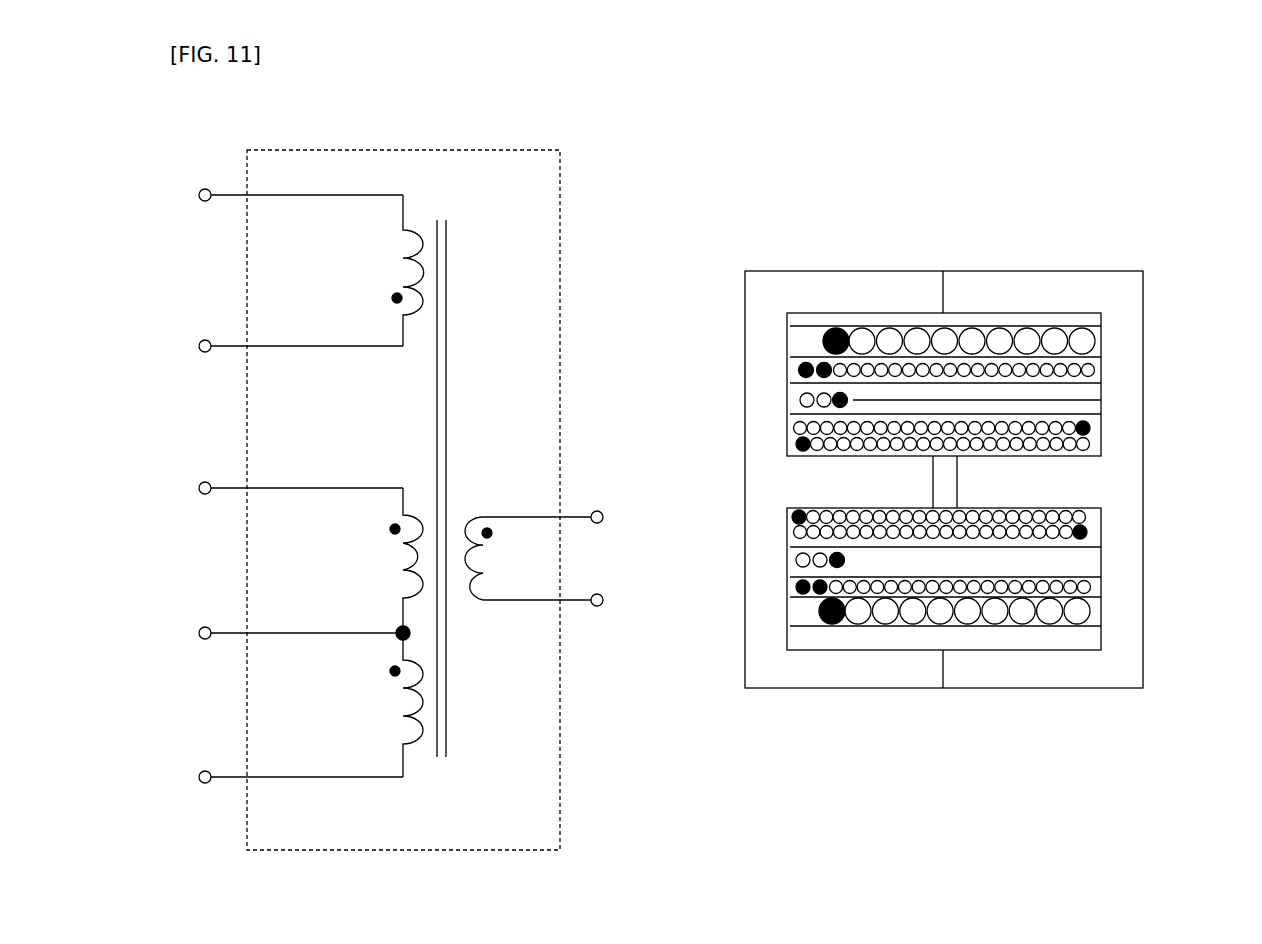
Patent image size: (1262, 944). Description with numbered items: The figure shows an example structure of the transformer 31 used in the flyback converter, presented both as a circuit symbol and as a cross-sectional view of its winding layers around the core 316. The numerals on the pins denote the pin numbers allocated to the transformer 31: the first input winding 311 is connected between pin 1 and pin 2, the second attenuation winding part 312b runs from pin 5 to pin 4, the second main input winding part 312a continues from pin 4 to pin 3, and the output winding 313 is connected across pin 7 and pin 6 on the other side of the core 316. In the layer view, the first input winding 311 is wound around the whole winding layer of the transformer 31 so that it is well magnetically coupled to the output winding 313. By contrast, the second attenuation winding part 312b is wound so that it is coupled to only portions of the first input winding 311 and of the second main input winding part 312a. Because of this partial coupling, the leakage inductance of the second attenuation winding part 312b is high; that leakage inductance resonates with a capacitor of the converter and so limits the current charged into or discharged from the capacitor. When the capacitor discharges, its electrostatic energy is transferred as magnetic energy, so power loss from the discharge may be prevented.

The transformer 31 is at (247, 150).
The first input winding 311 is at (390, 278).
The second main input winding part 312a is at (398, 700).
The second attenuation winding part 312b is at (398, 556).
The output winding 313 is at (485, 555).
The core 316 is at (445, 767).
The pin 1 is at (794, 428).
The pin 2 is at (796, 444).
The pin 3 is at (1172, 369).
The pin 4 is at (798, 370).
The pin 5 is at (1172, 400).
The pin 6 is at (1172, 341).
The pin 7 is at (824, 343).